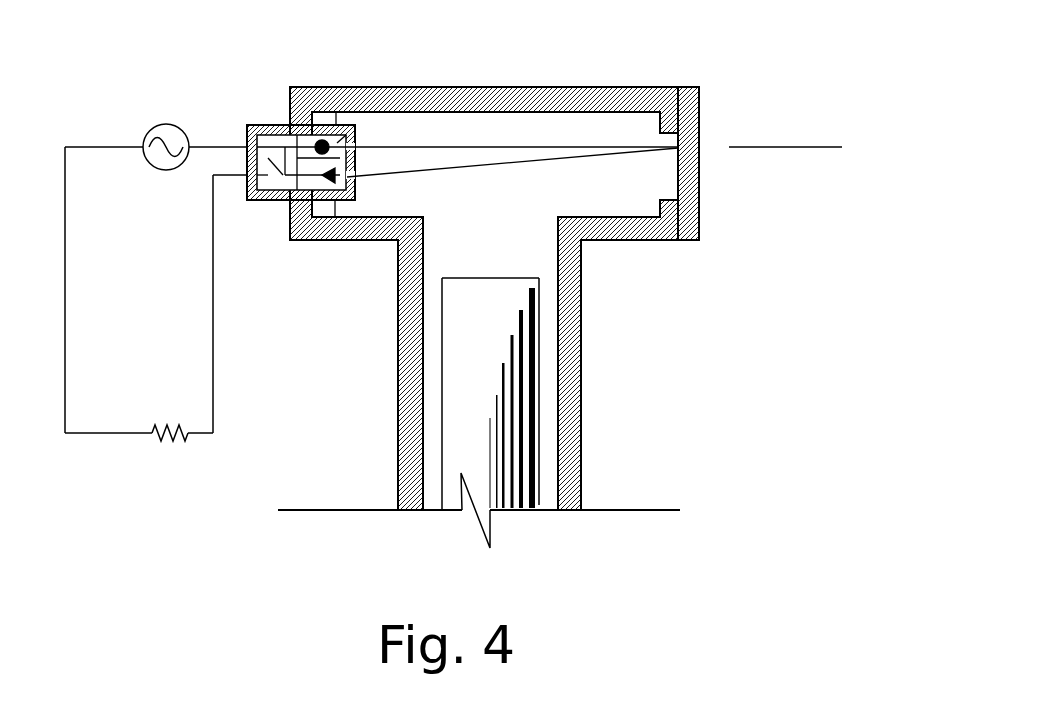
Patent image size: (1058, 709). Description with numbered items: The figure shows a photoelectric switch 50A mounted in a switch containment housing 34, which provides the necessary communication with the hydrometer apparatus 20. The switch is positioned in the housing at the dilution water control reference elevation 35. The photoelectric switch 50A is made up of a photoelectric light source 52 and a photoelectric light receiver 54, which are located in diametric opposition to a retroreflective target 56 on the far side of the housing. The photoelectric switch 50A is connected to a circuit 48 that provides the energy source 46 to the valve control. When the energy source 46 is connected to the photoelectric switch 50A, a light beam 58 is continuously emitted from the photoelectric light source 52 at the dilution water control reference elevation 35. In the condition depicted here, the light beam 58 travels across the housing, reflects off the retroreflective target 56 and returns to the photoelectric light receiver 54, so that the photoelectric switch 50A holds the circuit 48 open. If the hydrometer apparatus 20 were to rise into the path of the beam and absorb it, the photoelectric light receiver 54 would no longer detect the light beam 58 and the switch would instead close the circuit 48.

The hydrometer apparatus 20 is at (534, 409).
The switch containment housing 34 is at (480, 87).
The dilution water control reference elevation 35 is at (820, 160).
The energy source 46 is at (143, 130).
The circuit 48 is at (213, 330).
The photoelectric switch 50A is at (255, 115).
The photoelectric light source 52 is at (342, 87).
The photoelectric light receiver 54 is at (335, 240).
The retroreflective target 56 is at (700, 195).
The light beam 58 is at (602, 140).